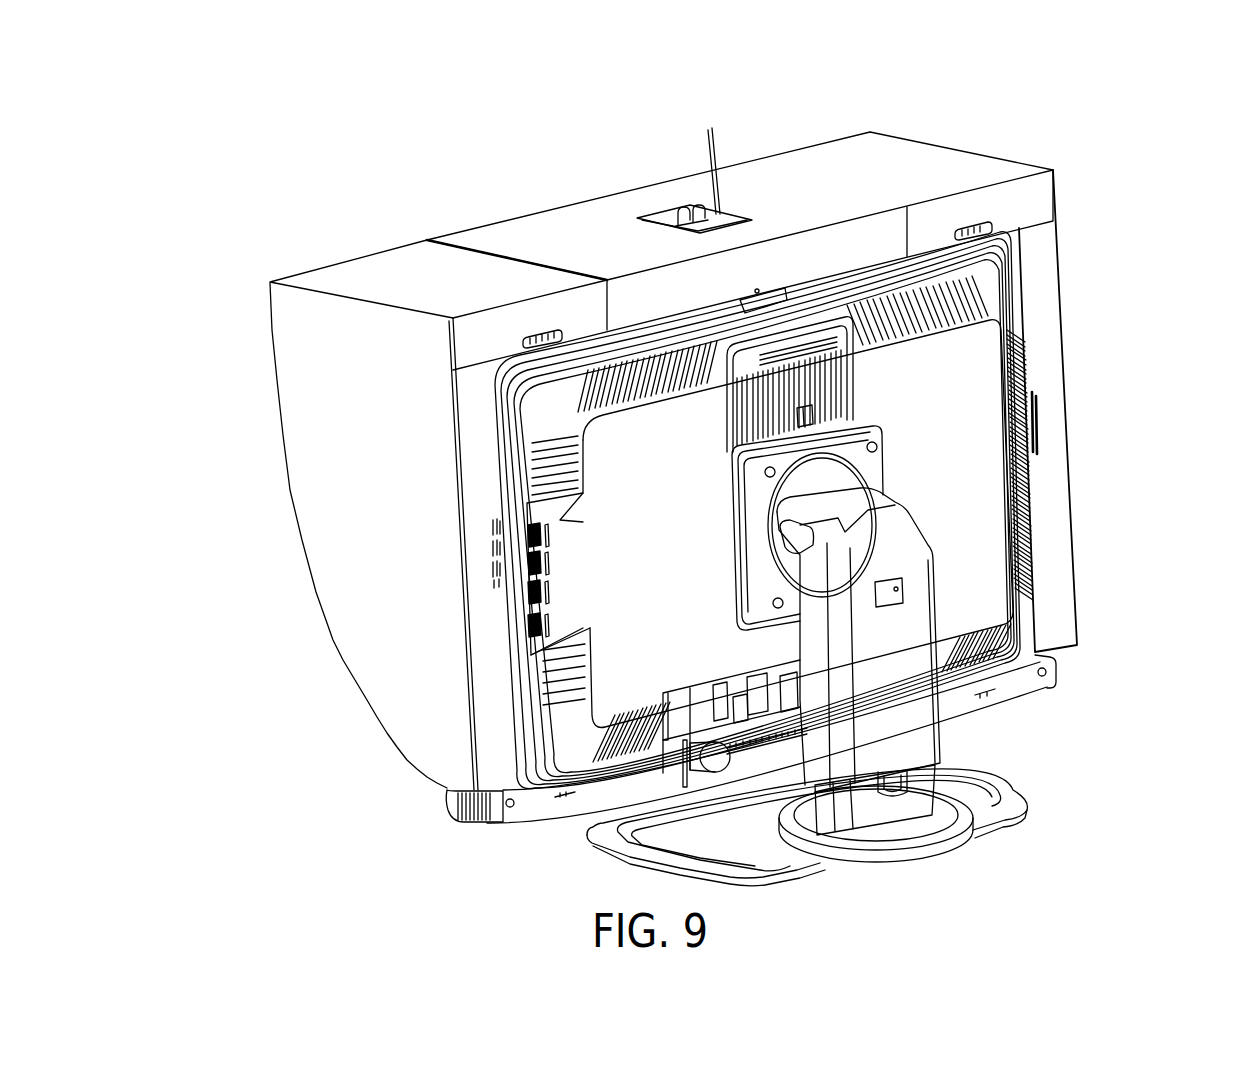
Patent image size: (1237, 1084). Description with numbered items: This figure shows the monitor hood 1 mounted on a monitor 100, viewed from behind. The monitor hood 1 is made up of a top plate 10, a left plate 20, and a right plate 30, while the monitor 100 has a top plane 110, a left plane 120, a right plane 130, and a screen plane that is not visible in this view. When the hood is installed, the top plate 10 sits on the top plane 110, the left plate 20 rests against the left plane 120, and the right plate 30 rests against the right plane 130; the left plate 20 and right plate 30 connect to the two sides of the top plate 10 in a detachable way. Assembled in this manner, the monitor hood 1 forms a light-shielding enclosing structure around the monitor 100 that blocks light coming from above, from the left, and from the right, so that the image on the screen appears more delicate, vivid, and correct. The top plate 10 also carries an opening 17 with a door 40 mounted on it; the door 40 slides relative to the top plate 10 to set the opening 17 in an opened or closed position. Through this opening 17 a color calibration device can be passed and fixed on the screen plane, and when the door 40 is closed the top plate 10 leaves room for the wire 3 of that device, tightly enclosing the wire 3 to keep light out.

The monitor hood 1 is at (571, 145).
The wire 3 is at (705, 130).
The top plate 10 is at (530, 226).
The opening 17 is at (738, 212).
The left plate 20 is at (1047, 337).
The right plate 30 is at (320, 490).
The door 40 is at (667, 212).
The monitor 100 is at (975, 852).
The top plane 110 is at (820, 285).
The left plane 120 is at (1030, 466).
The right plane 130 is at (452, 808).